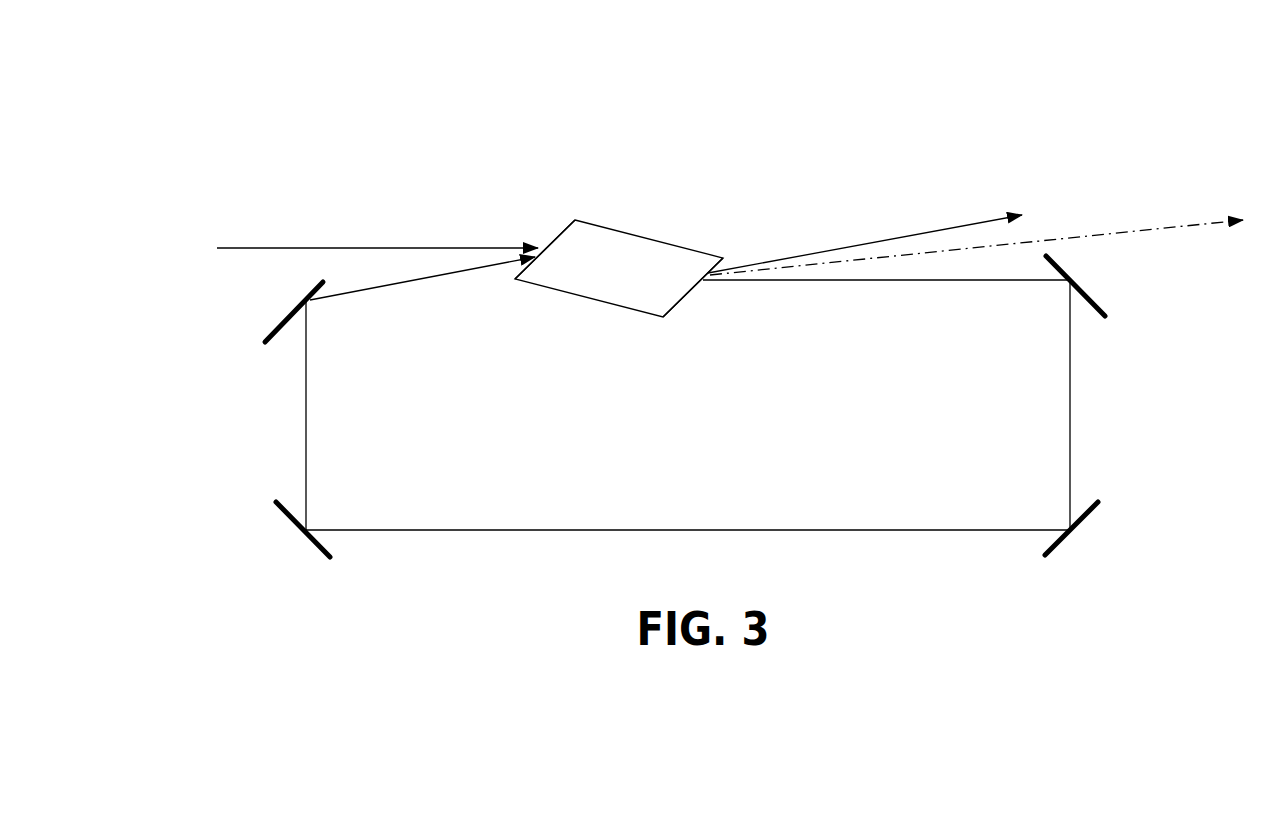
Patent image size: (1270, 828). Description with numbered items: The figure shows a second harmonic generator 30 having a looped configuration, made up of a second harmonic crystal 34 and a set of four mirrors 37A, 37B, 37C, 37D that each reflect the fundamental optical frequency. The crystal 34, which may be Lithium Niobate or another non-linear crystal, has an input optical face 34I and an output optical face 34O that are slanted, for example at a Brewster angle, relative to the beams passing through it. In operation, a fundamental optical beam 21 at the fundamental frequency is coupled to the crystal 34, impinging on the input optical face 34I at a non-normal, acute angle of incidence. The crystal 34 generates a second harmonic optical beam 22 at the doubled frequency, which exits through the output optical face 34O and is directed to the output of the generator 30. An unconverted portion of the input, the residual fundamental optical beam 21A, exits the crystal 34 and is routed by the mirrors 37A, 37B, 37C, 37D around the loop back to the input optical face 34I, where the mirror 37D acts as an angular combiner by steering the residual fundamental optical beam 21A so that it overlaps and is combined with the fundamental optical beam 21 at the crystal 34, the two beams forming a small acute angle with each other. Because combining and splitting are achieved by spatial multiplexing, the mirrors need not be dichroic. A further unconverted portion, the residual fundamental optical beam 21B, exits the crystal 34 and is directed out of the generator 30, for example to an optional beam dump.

The second harmonic generator 30 is at (306, 97).
The fundamental optical beam 21 is at (249, 246).
The residual fundamental optical beam 21A is at (351, 294).
The residual fundamental optical beam 21B is at (862, 242).
The second harmonic optical beam 22 is at (1133, 228).
The second harmonic crystal 34 is at (658, 238).
The input optical face 34I is at (554, 229).
The output optical face 34O is at (684, 305).
The mirror 37A is at (1113, 325).
The mirror 37B is at (1082, 538).
The mirror 37C is at (298, 538).
The mirror 37D is at (270, 349).